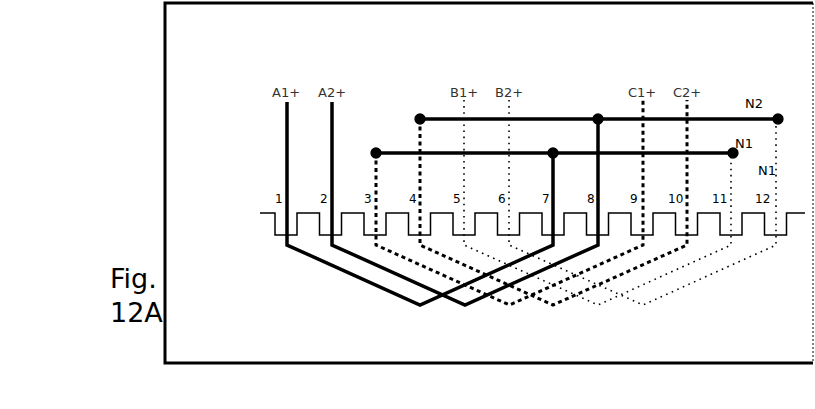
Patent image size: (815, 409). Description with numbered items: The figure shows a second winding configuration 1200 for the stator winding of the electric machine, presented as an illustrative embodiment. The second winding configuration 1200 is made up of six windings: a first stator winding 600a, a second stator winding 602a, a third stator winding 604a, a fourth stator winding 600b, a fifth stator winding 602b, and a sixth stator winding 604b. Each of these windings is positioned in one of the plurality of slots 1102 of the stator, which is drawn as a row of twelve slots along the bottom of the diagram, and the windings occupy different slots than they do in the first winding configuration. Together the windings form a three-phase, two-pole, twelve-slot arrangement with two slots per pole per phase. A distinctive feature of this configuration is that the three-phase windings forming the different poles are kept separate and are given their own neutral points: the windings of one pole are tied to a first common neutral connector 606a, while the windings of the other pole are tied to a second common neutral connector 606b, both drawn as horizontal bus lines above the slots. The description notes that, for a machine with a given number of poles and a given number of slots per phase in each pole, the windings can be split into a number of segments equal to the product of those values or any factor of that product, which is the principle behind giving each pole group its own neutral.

The first stator winding 600a is at (285, 140).
The fourth stator winding 600b is at (330, 152).
The second stator winding 602a is at (462, 113).
The fifth stator winding 602b is at (508, 115).
The third stator winding 604a is at (643, 113).
The sixth stator winding 604b is at (688, 115).
The first common neutral connector 606a is at (376, 153).
The second common neutral connector 606b is at (777, 115).
The plurality of slots 1102 is at (685, 237).
The second winding configuration 1200 is at (786, 325).